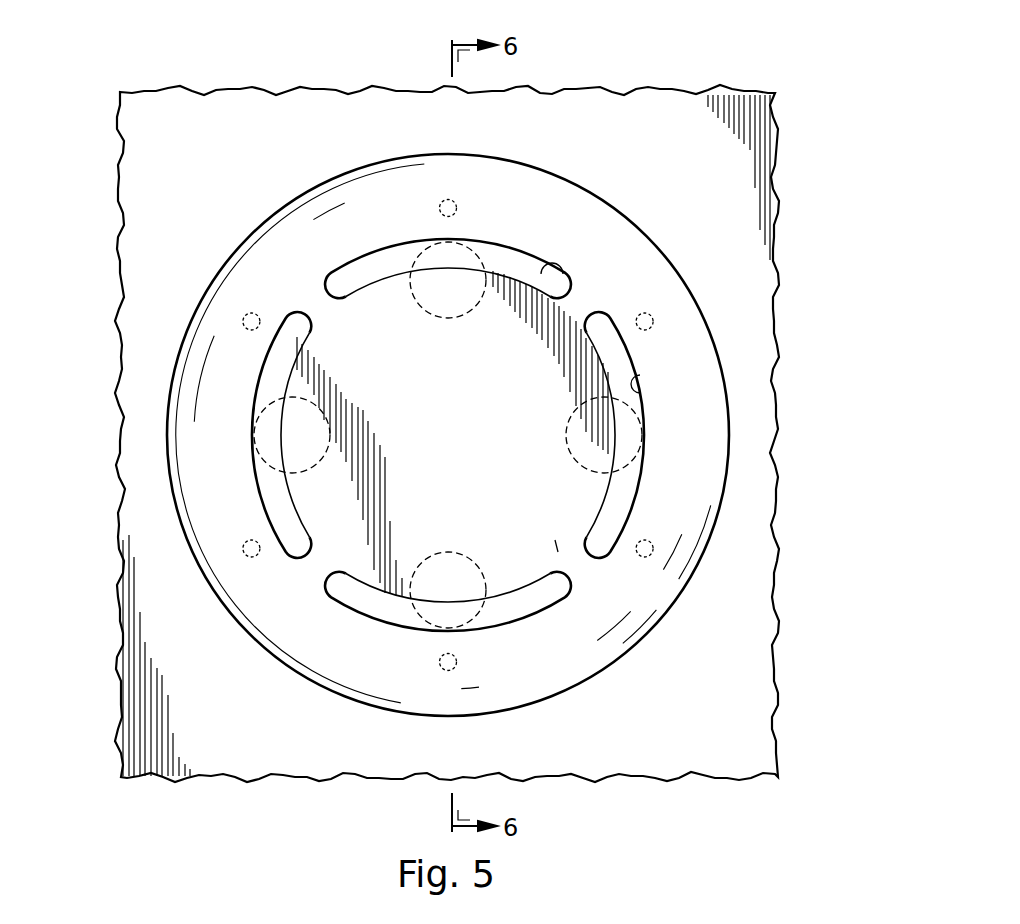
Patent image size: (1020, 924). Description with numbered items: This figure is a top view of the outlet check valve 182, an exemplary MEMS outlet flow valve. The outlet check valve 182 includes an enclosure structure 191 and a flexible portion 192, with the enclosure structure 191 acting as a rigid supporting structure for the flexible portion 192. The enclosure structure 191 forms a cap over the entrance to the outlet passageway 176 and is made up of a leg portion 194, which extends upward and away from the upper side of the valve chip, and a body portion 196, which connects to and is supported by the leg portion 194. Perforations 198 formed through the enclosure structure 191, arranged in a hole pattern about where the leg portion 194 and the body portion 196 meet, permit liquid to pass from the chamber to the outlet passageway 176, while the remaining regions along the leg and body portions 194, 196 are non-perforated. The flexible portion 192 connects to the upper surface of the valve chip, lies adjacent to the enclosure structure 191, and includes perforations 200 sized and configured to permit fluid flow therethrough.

The outlet passageway 176 is at (448, 435).
The outlet check valve 182 is at (447, 433).
The enclosure structure 191 is at (448, 427).
The flexible portion 192 is at (671, 418).
The leg portion 194 is at (510, 433).
The body portion 196 is at (597, 569).
The perforations 198 is at (624, 338).
The perforations 200 is at (477, 430).